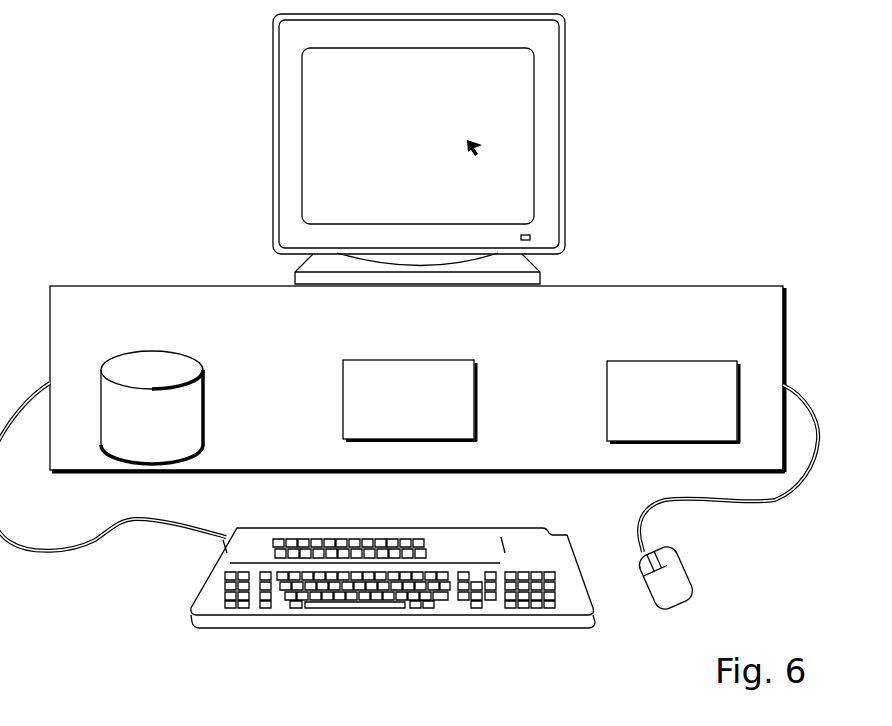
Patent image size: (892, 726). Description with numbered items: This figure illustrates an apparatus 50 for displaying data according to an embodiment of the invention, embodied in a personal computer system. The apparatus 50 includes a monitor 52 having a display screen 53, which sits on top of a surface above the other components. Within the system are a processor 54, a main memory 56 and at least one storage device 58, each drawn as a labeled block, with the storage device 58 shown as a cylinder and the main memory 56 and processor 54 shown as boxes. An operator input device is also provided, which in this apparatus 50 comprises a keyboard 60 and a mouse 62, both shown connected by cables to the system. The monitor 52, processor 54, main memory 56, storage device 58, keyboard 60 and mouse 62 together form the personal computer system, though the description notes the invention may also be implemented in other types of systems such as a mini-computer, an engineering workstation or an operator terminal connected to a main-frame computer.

The apparatus 50 is at (100, 110).
The monitor 52 is at (560, 187).
The display screen 53 is at (476, 150).
The processor 54 is at (668, 361).
The main memory 56 is at (410, 360).
The storage device 58 is at (132, 350).
The keyboard 60 is at (235, 617).
The mouse 62 is at (690, 583).